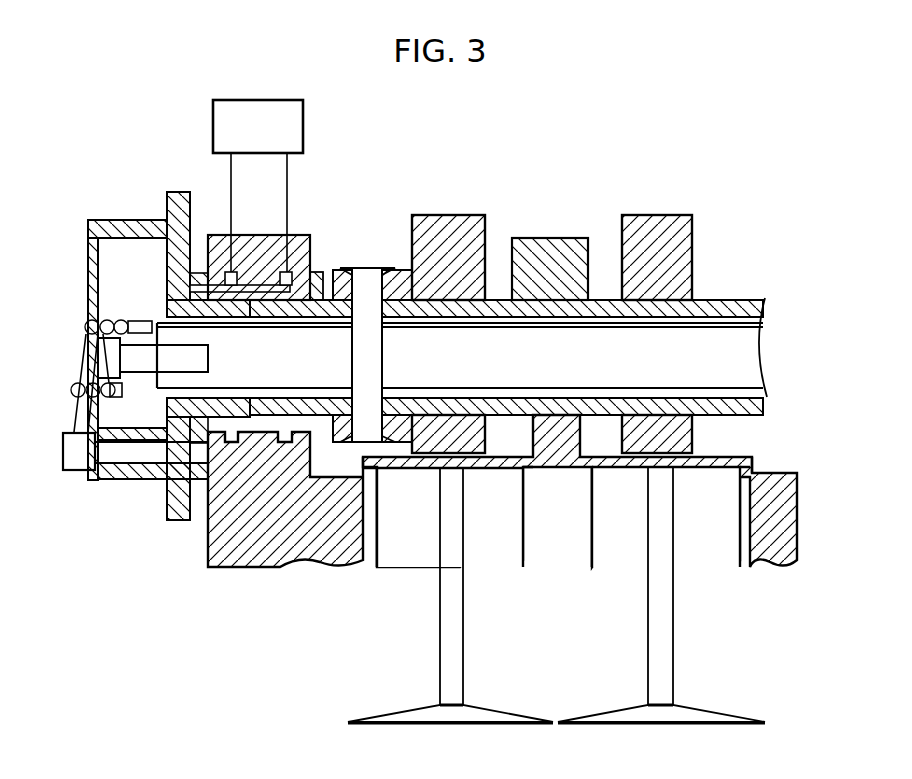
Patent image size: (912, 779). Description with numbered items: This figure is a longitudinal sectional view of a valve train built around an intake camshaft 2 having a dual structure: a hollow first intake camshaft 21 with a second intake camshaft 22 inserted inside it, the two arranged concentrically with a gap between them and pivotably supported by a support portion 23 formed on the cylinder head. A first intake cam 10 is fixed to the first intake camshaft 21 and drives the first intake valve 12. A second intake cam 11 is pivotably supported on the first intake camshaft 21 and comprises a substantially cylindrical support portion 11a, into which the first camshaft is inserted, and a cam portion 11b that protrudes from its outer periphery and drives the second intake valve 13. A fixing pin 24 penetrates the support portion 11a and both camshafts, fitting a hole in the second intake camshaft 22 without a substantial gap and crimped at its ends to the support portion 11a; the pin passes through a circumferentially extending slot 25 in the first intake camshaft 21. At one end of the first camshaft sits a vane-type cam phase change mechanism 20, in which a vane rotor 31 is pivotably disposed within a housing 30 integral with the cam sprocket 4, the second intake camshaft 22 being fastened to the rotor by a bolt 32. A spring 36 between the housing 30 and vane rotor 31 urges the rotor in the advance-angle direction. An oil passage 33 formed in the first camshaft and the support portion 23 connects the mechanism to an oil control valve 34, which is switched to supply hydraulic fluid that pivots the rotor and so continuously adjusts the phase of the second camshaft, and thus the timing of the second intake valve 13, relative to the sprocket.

The intake camshaft 2 is at (506, 351).
The cam sprocket 4 is at (177, 191).
The first intake cam 10 is at (651, 215).
The second intake cam 11 is at (439, 299).
The support portion 11a is at (397, 268).
The cam portion 11b is at (450, 213).
The first intake valve 12 is at (662, 620).
The second intake valve 13 is at (447, 626).
The cam phase change mechanism 20 is at (122, 310).
The first intake camshaft 21 is at (766, 305).
The second intake camshaft 22 is at (752, 345).
The support portion 23 is at (260, 245).
The fixing pin 24 is at (340, 268).
The slot 25 is at (365, 290).
The housing 30 is at (140, 218).
The vane rotor 31 is at (112, 275).
The bolt 32 is at (103, 355).
The oil passage 33 is at (198, 272).
The oil control valve 34 is at (305, 110).
The spring 36 is at (88, 326).